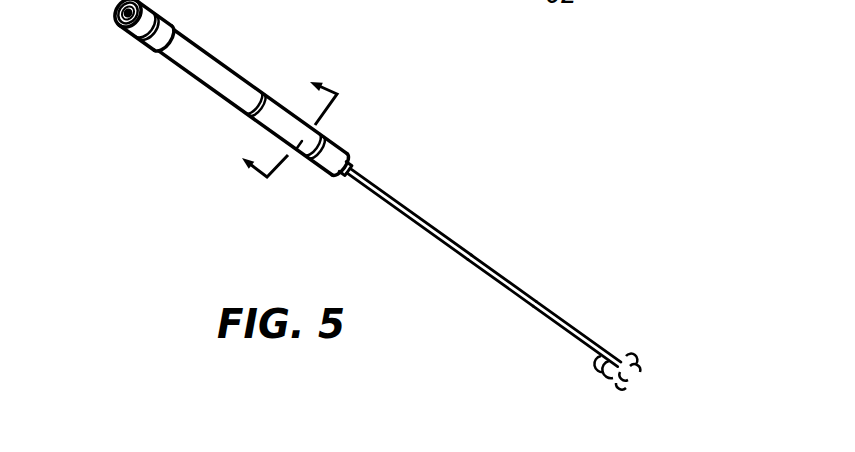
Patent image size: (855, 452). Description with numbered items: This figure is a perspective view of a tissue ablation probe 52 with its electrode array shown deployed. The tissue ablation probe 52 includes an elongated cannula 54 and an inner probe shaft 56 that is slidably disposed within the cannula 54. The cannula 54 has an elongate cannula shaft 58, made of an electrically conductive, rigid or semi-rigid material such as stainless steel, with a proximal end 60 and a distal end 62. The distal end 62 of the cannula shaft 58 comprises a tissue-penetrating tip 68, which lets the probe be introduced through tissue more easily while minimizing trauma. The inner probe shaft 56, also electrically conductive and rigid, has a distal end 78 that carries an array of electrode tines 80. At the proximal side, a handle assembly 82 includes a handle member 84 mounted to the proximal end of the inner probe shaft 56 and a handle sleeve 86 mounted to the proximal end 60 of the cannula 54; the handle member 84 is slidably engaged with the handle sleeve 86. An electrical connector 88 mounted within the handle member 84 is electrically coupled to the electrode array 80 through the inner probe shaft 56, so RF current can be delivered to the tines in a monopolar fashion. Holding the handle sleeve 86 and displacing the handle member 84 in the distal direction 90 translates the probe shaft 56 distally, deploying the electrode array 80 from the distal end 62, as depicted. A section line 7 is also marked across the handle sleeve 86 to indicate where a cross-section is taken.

The tissue ablation probe 52 is at (400, 137).
The elongated cannula 54 is at (417, 213).
The inner probe shaft 56 is at (603, 352).
The cannula shaft 58 is at (455, 256).
The proximal end of cannula shaft 60 is at (341, 170).
The distal end of cannula shaft 62 is at (541, 311).
The tissue-penetrating tip 68 is at (595, 343).
The distal end of inner probe shaft 78 is at (602, 362).
The electrode array 80 is at (630, 382).
The handle assembly 82 is at (195, 89).
The handle member 84 is at (118, 33).
The handle sleeve 86 is at (210, 51).
The electrical connector 88 is at (115, 14).
The distal direction 90 is at (520, 265).
The section line 7- 7 is at (288, 130).